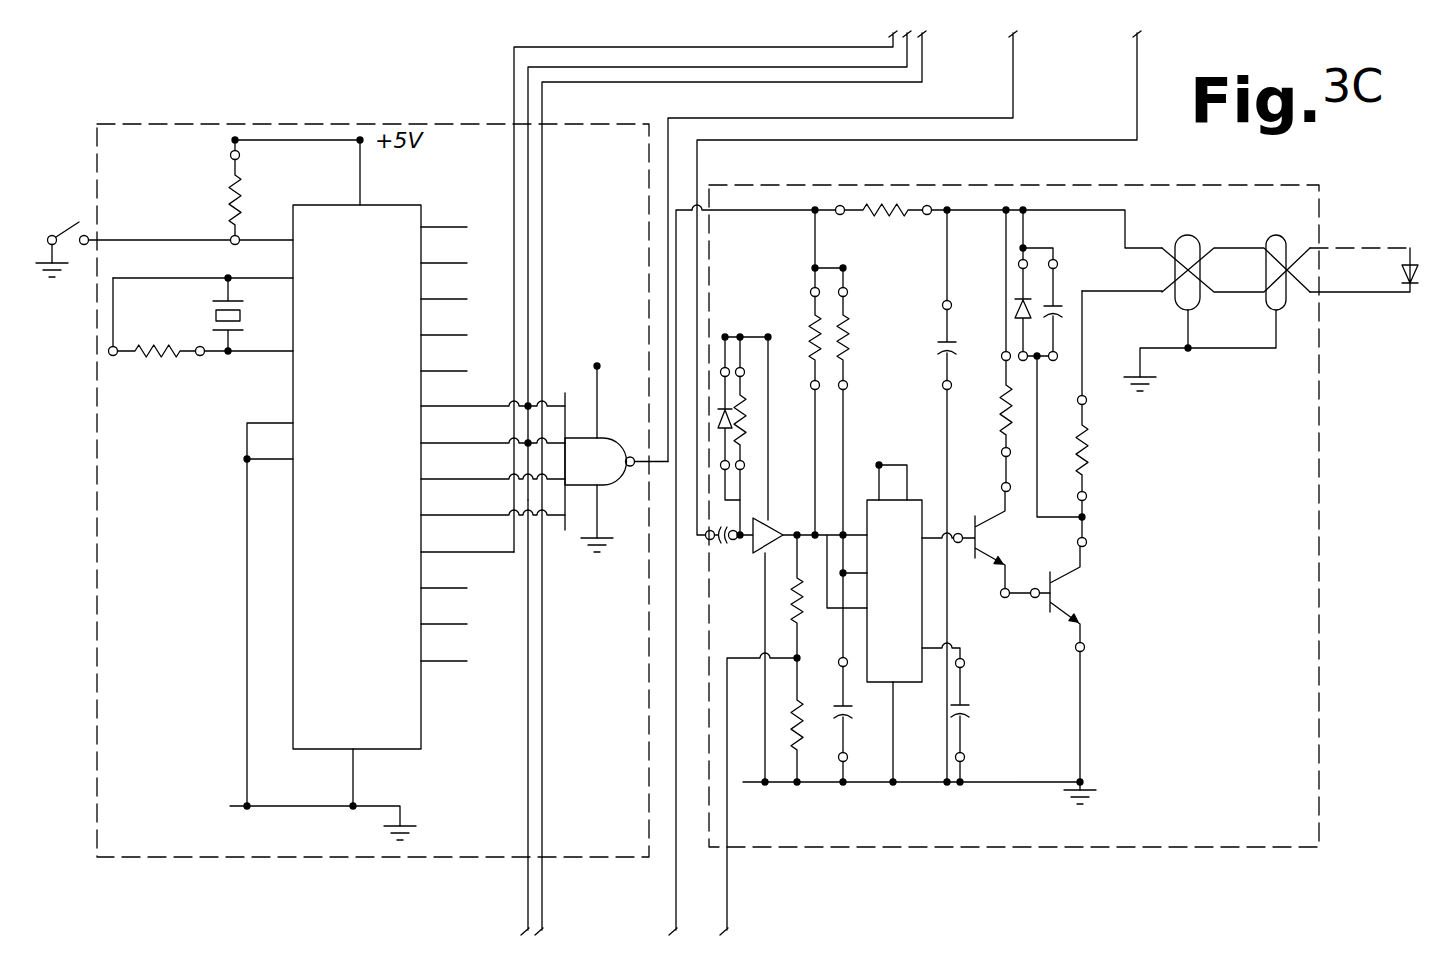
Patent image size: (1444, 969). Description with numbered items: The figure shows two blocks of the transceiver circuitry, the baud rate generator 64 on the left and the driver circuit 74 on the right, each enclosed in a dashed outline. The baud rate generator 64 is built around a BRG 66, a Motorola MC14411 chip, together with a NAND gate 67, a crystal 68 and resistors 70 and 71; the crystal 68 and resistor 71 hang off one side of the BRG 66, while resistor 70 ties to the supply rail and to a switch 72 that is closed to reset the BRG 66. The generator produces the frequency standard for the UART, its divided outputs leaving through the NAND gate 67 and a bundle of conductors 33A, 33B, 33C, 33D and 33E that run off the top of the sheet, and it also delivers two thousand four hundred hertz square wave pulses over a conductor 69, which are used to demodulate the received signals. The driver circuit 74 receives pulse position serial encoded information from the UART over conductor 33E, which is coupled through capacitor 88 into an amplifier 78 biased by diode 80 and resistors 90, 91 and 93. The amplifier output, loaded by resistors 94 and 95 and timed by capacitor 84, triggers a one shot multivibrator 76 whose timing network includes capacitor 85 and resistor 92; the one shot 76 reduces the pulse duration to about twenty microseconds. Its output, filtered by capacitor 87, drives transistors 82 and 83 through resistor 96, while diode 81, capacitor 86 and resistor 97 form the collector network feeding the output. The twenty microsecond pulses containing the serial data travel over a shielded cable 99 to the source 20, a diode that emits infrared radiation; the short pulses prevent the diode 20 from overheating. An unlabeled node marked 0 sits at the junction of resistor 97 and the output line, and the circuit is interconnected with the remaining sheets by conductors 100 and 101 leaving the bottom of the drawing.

The baud rate generator 64 is at (97, 586).
The driver circuit 74 is at (1320, 470).
The switch 72 is at (63, 234).
The resistor 70 is at (243, 205).
The crystal 68 is at (243, 316).
The resistor 71 is at (166, 349).
The BRG 66 is at (418, 205).
The NAND gate 67 is at (604, 438).
The conductor 33A is at (893, 40).
The conductor 33B is at (848, 67).
The conductor 33C is at (922, 74).
The conductor 33D is at (1013, 84).
The conductor 33E is at (1137, 70).
The conductor 69 is at (526, 768).
The conductor 100 is at (676, 903).
The conductor 101 is at (727, 912).
The resistor 92 is at (873, 212).
The resistor 91 is at (815, 322).
The resistor 93 is at (844, 332).
The resistor 90 is at (743, 430).
The diode 80 is at (728, 430).
The capacitor 88 is at (712, 548).
The amplifier 78 is at (768, 522).
The resistor 94 is at (800, 608).
The resistor 95 is at (800, 728).
The capacitor 84 is at (846, 706).
The one shot multivibrator 76 is at (920, 500).
The capacitor 85 is at (946, 344).
The capacitor 87 is at (965, 706).
The transistor 82 is at (975, 527).
The transistor 83 is at (1048, 606).
The resistor 96 is at (1002, 412).
The diode 81 is at (1027, 303).
The capacitor 86 is at (1058, 310).
The resistor 97 is at (1086, 447).
The node 0 is at (1086, 516).
The shielded cable 99 is at (1240, 250).
The source 20 is at (1402, 277).